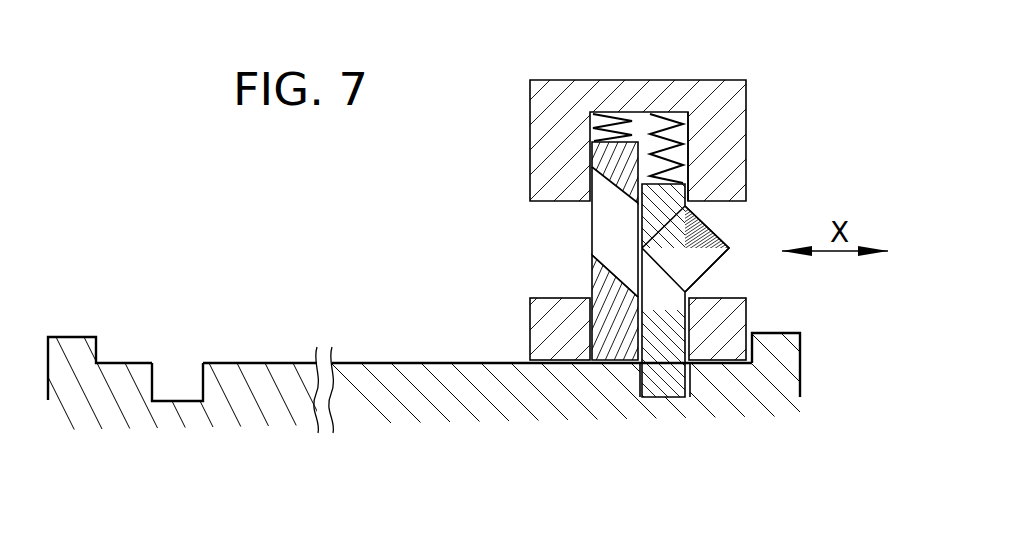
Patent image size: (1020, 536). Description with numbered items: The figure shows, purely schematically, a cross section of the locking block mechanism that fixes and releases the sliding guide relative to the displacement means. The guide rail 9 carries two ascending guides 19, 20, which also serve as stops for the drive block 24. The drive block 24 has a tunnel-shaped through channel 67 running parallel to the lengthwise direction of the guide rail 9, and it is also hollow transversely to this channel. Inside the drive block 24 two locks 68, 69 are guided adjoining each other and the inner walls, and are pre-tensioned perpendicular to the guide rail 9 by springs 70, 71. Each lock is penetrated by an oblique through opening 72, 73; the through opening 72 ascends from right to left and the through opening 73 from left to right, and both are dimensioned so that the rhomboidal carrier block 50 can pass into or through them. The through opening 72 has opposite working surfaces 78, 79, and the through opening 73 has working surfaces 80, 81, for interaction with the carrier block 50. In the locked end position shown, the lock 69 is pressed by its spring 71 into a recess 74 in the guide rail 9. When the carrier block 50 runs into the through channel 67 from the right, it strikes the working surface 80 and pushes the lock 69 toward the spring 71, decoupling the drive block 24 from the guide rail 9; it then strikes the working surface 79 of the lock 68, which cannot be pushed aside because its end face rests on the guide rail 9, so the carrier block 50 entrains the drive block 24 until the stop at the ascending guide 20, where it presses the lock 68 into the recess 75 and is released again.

The guide rail 9 is at (262, 377).
The ascending guide 20 is at (96, 347).
The recess 75 is at (175, 382).
The ascending guide 19 is at (760, 380).
The drive block 24 is at (720, 100).
The working surface 80 is at (695, 226).
The through channel 67 is at (563, 242).
The working surface 81 is at (653, 333).
The working surface 78 is at (595, 191).
The through opening 72 is at (613, 208).
The lock 68 is at (614, 340).
The working surface 79 is at (634, 290).
The spring 70 is at (615, 113).
The spring 71 is at (668, 110).
The carrier block 50 is at (705, 235).
The through opening 73 is at (663, 297).
The lock 69 is at (668, 373).
The recess 74 is at (693, 377).